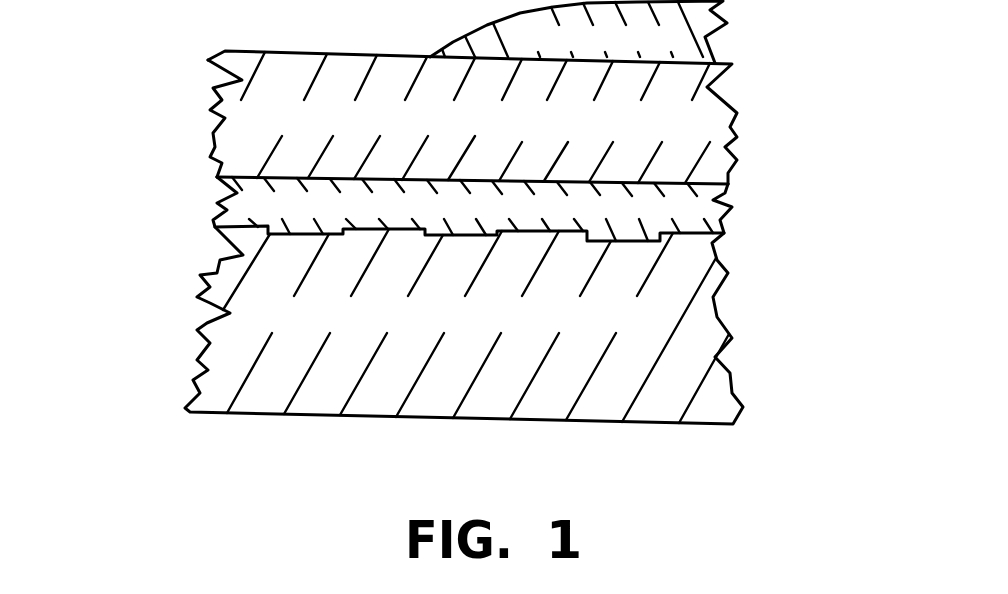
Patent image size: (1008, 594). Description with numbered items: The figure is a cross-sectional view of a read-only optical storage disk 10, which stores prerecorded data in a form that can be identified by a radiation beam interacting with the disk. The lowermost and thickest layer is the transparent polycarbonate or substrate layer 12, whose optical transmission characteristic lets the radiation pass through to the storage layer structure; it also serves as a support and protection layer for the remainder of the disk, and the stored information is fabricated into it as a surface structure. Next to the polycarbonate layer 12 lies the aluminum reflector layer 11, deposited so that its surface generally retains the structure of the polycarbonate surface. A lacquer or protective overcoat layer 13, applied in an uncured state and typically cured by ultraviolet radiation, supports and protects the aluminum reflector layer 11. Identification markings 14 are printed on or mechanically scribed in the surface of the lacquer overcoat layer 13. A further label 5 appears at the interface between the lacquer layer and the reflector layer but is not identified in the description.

The read-only optical storage disk 10 is at (162, 119).
The interface between lacquer overcoat and reflector layer 5 is at (220, 184).
The identification markings 14 is at (707, 33).
The lacquer overcoat layer 13 is at (737, 137).
The aluminum reflector layer 11 is at (730, 207).
The polycarbonate layer 12 is at (732, 340).